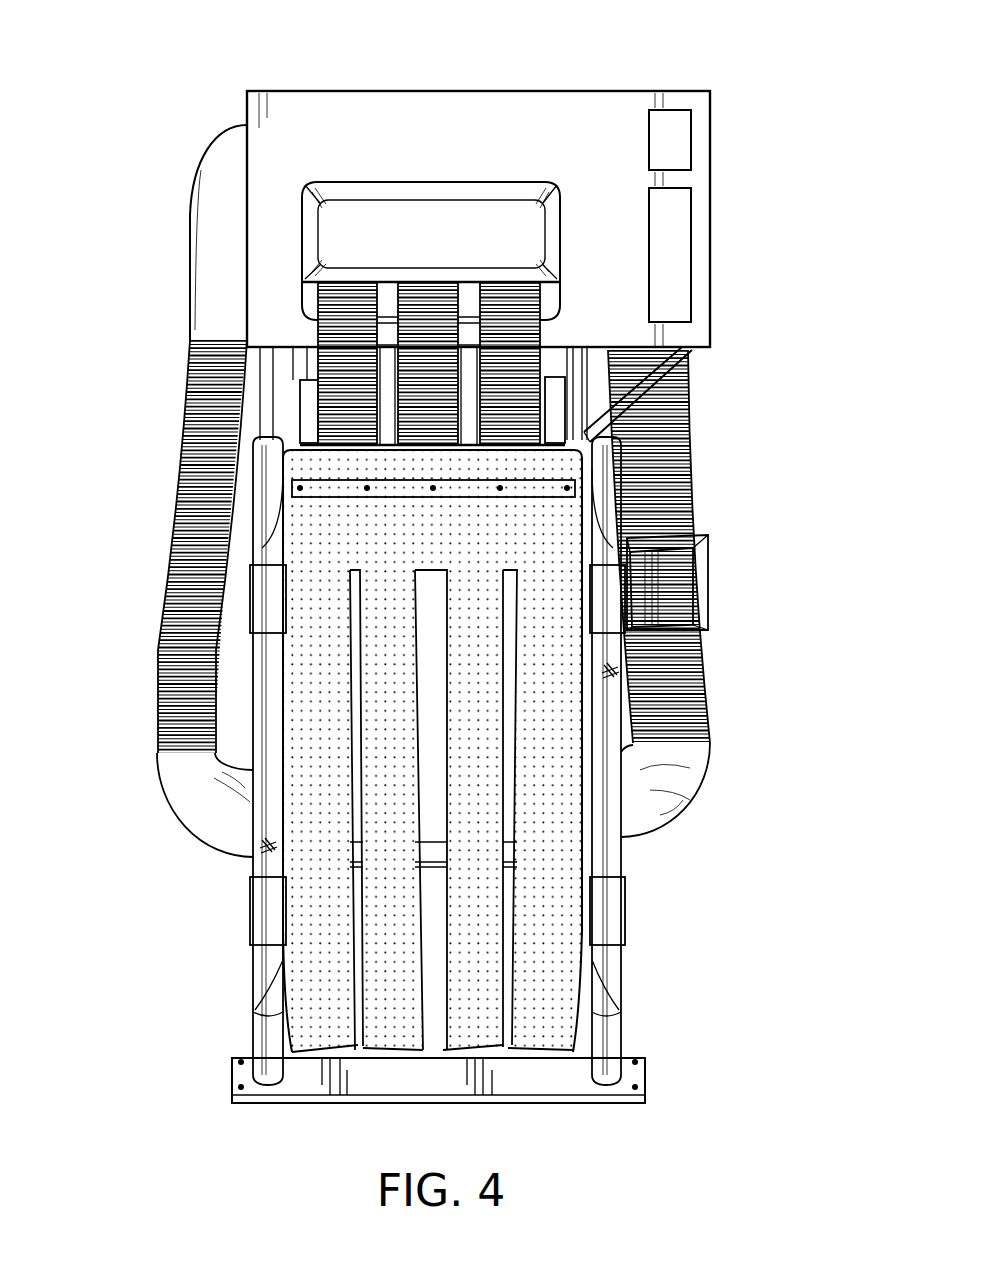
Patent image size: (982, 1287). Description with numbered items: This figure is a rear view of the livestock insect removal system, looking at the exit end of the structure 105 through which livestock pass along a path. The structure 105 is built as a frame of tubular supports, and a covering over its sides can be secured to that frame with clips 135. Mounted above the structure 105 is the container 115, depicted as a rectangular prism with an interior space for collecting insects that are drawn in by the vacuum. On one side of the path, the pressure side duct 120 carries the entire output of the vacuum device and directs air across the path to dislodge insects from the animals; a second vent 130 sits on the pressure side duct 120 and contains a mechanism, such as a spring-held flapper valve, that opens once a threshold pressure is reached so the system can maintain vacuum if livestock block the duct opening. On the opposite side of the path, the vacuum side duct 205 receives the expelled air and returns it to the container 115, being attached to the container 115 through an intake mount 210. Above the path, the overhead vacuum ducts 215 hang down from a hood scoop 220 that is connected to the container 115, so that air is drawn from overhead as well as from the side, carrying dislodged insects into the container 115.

The structure 105 is at (688, 415).
The container 115 is at (578, 112).
The pressure side duct 120 is at (695, 490).
The second vent 130 is at (686, 597).
The clips 135 is at (272, 597).
The vacuum side duct 205 is at (184, 457).
The intake mount 210 is at (203, 207).
The overhead vacuum ducts 215 is at (337, 383).
The hood scoop 220 is at (333, 235).